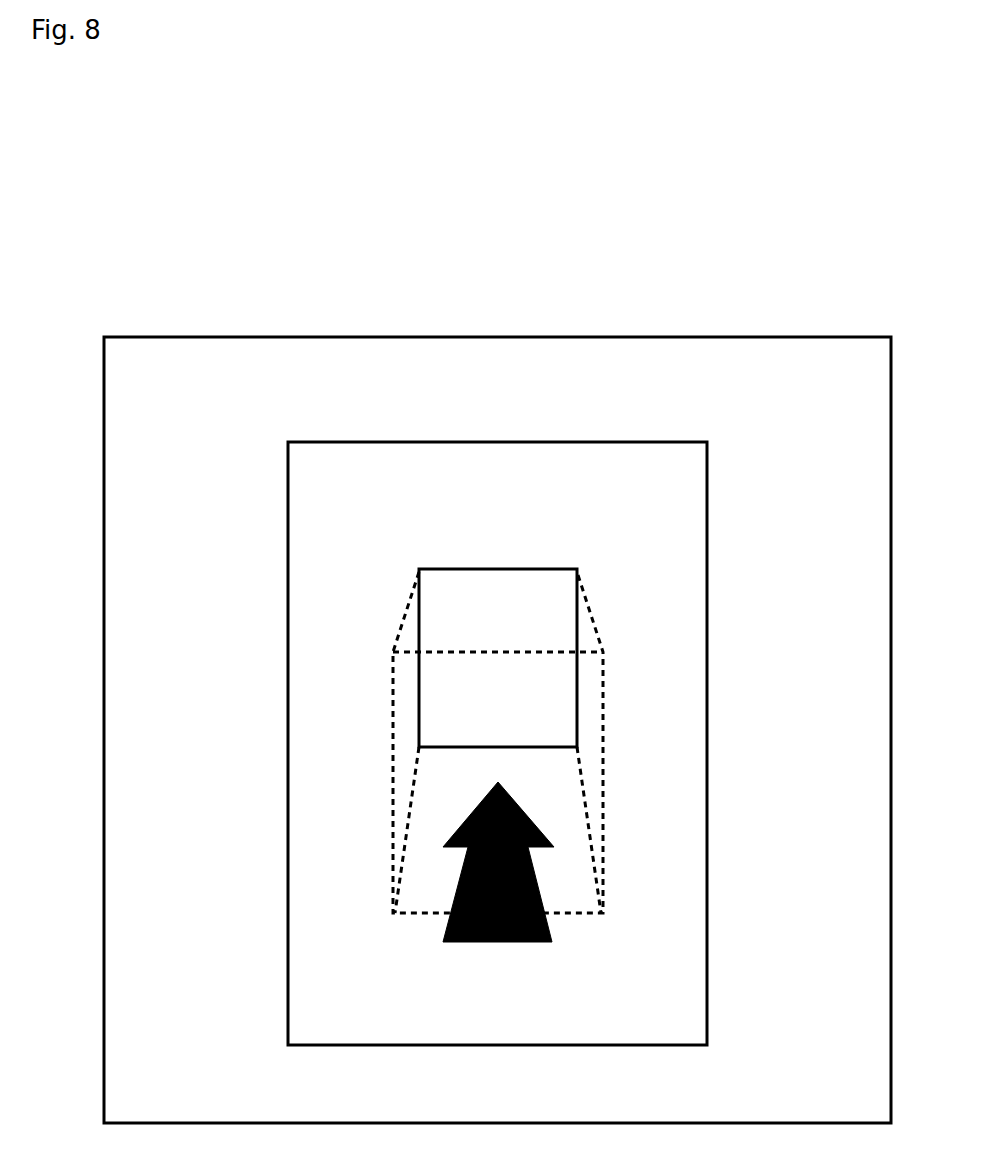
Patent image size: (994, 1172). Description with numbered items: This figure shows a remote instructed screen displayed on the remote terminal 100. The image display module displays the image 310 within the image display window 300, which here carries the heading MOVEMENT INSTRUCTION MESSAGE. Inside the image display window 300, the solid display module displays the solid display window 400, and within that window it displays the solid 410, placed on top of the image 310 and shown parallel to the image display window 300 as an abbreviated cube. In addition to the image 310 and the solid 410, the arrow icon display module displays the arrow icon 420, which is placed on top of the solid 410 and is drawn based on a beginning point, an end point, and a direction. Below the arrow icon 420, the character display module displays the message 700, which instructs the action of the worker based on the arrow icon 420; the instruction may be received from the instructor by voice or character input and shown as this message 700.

The remote terminal 100 is at (795, 252).
The image display window 300 is at (581, 337).
The image 310 is at (796, 445).
The solid display window 400 is at (692, 445).
The solid 410 is at (560, 580).
The arrow icon 420 is at (548, 925).
The message 700 is at (628, 994).